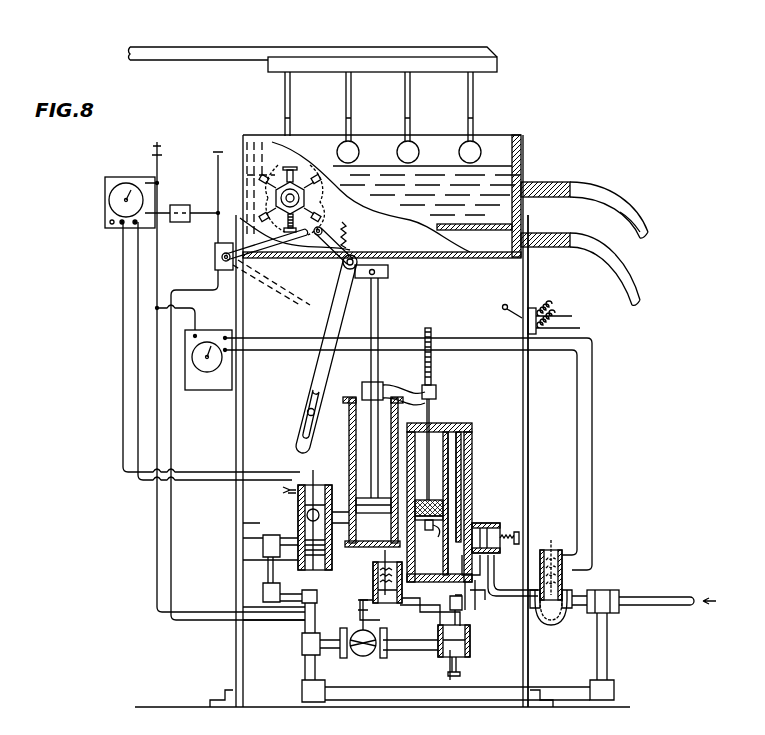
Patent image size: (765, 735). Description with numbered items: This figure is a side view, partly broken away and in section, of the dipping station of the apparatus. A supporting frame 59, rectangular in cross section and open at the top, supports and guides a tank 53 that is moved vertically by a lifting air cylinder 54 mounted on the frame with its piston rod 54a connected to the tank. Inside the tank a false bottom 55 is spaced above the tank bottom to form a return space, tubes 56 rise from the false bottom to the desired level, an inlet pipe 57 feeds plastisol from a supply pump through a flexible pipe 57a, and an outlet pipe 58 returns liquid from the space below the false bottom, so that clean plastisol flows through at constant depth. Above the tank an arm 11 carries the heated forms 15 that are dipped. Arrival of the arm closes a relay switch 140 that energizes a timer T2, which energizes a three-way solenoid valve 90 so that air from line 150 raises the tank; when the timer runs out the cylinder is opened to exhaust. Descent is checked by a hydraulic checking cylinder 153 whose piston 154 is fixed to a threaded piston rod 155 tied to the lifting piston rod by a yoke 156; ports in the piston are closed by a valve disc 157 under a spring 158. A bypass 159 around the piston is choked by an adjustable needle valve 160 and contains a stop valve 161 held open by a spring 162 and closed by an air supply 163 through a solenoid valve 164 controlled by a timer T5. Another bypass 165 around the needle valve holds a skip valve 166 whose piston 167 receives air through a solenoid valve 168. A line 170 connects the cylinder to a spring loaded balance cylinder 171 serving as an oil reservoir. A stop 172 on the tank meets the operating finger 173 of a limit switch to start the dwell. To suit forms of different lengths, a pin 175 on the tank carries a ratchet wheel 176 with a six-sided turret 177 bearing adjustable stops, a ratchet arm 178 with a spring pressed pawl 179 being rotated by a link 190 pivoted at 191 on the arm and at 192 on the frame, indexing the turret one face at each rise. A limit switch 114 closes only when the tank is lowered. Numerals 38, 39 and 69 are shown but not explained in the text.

The arm 11 is at (256, 48).
The forms 15 is at (466, 100).
The positive supply line 38 is at (152, 160).
The negative supply line 39 is at (218, 162).
The tank 53 is at (521, 155).
The lifting air cylinder 54 is at (349, 456).
The piston rod 54a is at (380, 310).
The false bottom 55 is at (445, 242).
The tubes 56 is at (272, 140).
The inlet pipe 57 is at (558, 182).
The flexible pipe 57a is at (618, 212).
The outlet pipe 58 is at (548, 233).
The supporting frame 59 is at (530, 292).
The pivot bracket 69 is at (214, 253).
The three-way solenoid valve 90 is at (298, 519).
The limit switch 114 is at (540, 309).
The relay switch 140 is at (178, 205).
The air pressure line 150 is at (665, 597).
The hydraulic checking cylinder 153 is at (458, 470).
The piston 154 is at (445, 506).
The piston rod 155 is at (432, 372).
The yoke 156 is at (438, 394).
The valve disc 157 is at (445, 518).
The spring 158 is at (431, 539).
The bypass 159 is at (472, 448).
The adjustable needle valve 160 is at (478, 605).
The stop valve 161 is at (498, 527).
The spring 162 is at (506, 537).
The air supply 163 is at (496, 592).
The solenoid operated valve 164 is at (566, 592).
The bypass 165 is at (478, 625).
The skip valve 166 is at (468, 665).
The piston 167 is at (438, 655).
The solenoid valve 168 is at (360, 658).
The line 170 is at (392, 612).
The balance cylinder 171 is at (372, 582).
The stop 172 is at (328, 250).
The operating finger 173 is at (265, 260).
The pin 175 is at (292, 175).
The ratchet wheel 176 is at (298, 170).
The turret 177 is at (310, 198).
The ratchet arm 178 is at (350, 245).
The pawl 179 is at (300, 225).
The link 190 is at (312, 370).
The pivot 191 is at (303, 302).
The pivot 192 is at (303, 432).
The timer T2 is at (104, 208).
The timer T5 is at (232, 392).